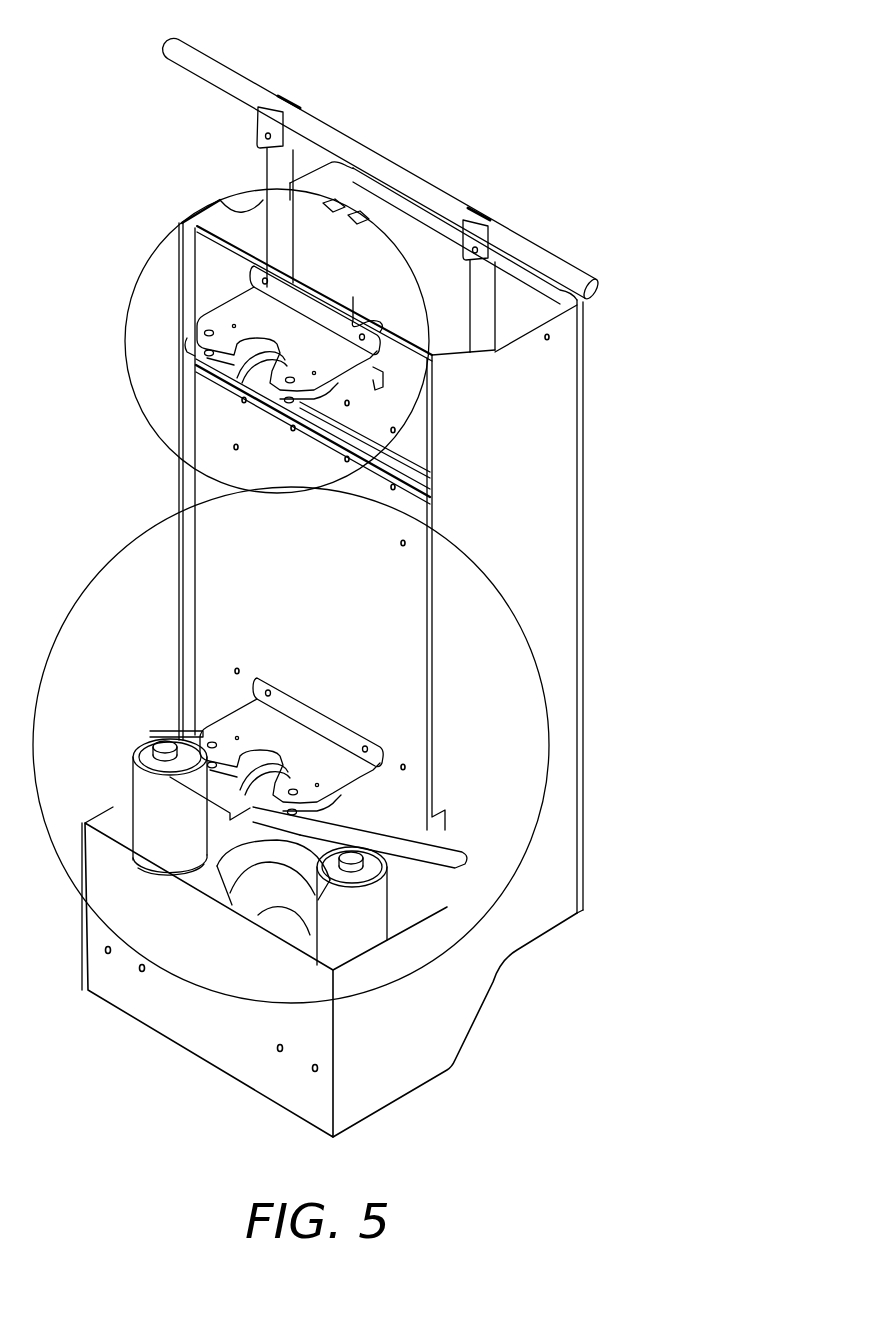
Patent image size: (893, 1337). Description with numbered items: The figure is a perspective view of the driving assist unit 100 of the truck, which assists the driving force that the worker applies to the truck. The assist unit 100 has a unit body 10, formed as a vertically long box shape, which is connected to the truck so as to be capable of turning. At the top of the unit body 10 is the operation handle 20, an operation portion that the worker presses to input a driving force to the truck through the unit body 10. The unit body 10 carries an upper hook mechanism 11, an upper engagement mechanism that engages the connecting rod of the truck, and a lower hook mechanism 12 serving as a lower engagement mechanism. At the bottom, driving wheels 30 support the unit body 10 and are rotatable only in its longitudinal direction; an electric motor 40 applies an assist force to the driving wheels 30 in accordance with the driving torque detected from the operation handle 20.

The assist unit 100 is at (345, 568).
The unit body 10 is at (527, 568).
The upper hook mechanism 11 is at (180, 349).
The lower hook mechanism 12 is at (190, 737).
The operation handle 20 is at (392, 174).
The driving wheels 30 is at (228, 880).
The electric motor 40 is at (157, 805).